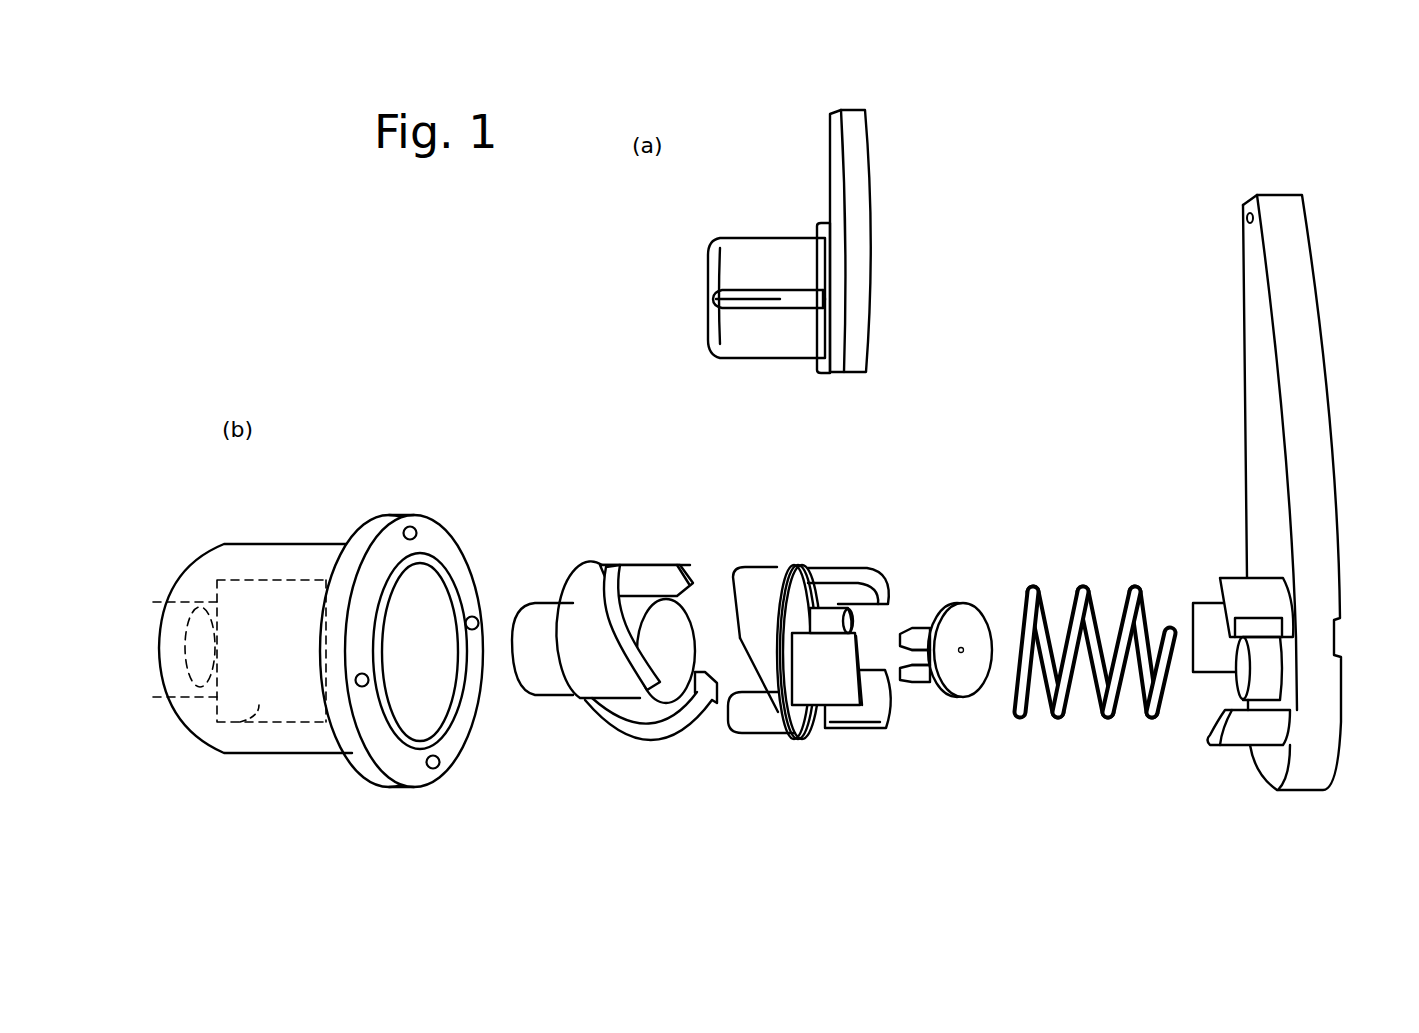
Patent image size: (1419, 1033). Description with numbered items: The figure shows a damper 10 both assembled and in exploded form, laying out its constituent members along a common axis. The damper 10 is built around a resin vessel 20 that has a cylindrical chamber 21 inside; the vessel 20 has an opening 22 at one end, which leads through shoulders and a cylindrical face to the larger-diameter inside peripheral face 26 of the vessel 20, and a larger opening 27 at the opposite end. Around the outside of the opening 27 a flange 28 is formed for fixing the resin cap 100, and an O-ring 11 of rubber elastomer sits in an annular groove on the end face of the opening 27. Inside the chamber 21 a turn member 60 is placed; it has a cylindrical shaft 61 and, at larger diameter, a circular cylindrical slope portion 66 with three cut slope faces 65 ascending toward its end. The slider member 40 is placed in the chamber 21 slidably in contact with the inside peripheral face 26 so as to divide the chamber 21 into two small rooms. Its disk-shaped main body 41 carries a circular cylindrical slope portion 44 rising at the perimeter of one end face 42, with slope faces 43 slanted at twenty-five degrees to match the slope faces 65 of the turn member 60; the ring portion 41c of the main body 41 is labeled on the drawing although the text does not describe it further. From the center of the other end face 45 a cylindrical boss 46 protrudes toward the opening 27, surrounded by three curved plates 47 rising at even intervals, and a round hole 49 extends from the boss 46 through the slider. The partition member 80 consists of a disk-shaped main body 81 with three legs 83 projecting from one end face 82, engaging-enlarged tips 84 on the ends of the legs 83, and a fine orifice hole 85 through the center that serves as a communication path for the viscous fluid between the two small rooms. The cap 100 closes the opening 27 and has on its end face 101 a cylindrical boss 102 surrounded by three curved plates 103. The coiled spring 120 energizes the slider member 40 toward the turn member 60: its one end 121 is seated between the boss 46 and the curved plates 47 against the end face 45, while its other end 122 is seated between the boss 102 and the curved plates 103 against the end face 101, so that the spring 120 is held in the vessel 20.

The damper 10 is at (765, 124).
The O-ring 11 is at (445, 730).
The resin vessel 20 is at (746, 231).
The cylindrical chamber 21 is at (259, 606).
The opening 22 is at (166, 635).
The inside peripheral face 26 is at (259, 723).
The opening 27 is at (415, 632).
The flange 28 is at (828, 372).
The slider member 40 is at (818, 514).
The main body 41 is at (800, 742).
The ring portion inner surface 41c is at (797, 745).
The end face 42 is at (779, 733).
The slope face 43 is at (745, 670).
The circular cylindrical slope portion 44 is at (760, 583).
The end face 45 is at (812, 620).
The cylindrical boss 46 is at (790, 600).
The curved plates 47 is at (840, 568).
The round hole 49 is at (853, 622).
The turn member 60 is at (620, 478).
The cylindrical shaft 61 is at (520, 688).
The slope face 65 is at (690, 598).
The circular cylindrical slope portion 66 is at (585, 668).
The partition member 80 is at (950, 540).
The main body 81 is at (970, 605).
The end face 82 is at (905, 636).
The legs 83 is at (925, 690).
The engaging-enlarged tips 84 is at (915, 684).
The orifice hole 85 is at (963, 652).
The resin cap 100 is at (882, 263).
The end face 101 is at (1248, 442).
The cylindrical boss 102 is at (1275, 660).
The curved plates 103 is at (1213, 608).
The coiled spring 120 is at (1080, 543).
The one end of coiled spring 121 is at (1032, 715).
The another end of coiled spring 122 is at (1160, 712).